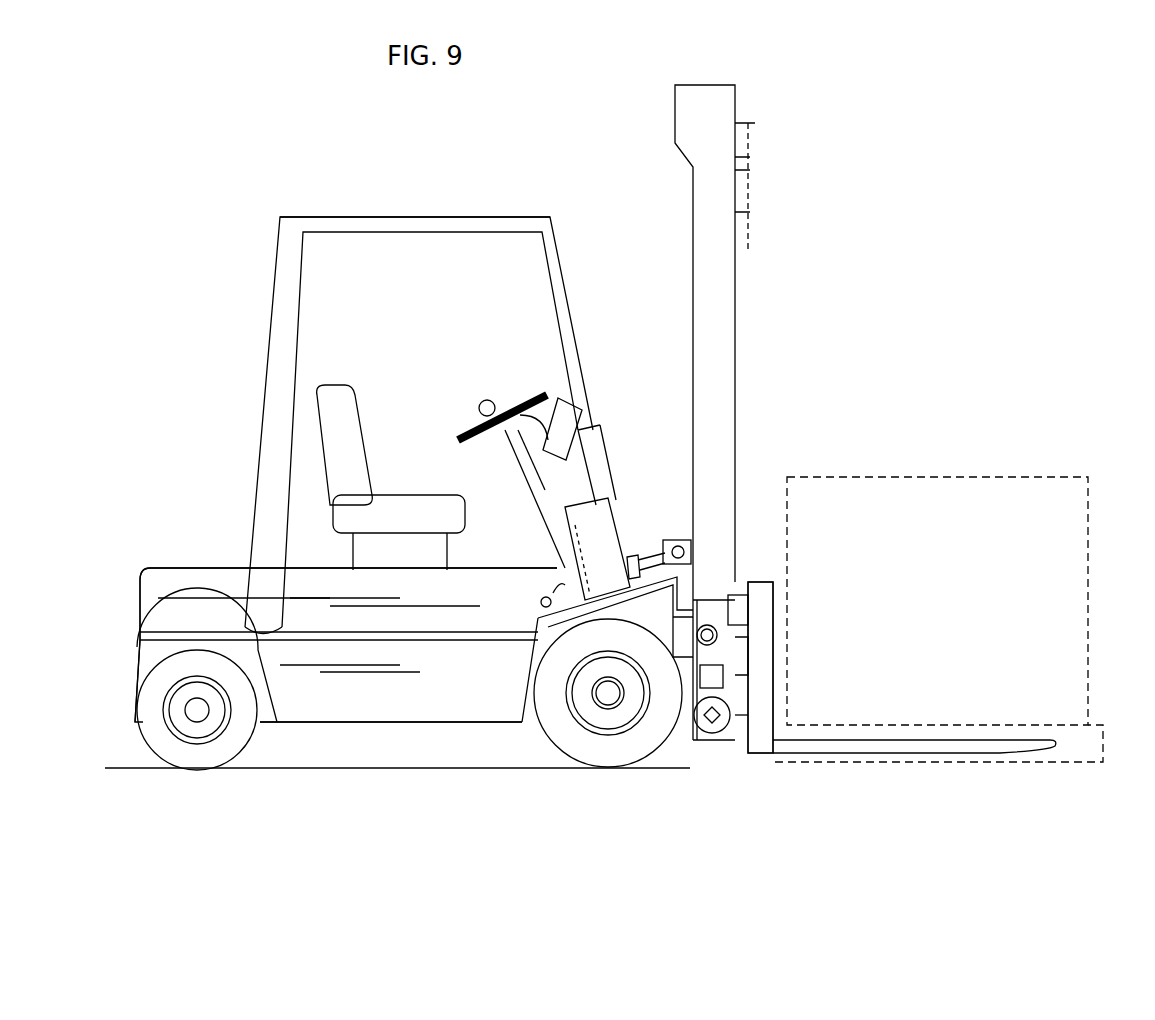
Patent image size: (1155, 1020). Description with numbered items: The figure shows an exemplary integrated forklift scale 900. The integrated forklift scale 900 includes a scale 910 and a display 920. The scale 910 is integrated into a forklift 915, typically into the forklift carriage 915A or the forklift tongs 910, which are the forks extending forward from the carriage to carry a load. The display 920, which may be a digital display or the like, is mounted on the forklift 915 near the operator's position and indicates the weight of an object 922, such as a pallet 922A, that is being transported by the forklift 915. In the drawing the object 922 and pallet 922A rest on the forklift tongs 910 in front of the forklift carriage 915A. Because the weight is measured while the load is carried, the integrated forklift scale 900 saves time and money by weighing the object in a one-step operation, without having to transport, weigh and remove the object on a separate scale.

The integrated forklift scale 900 is at (439, 427).
The scale 910 is at (945, 757).
The forklift 915 is at (372, 717).
The forklift carriage 915A is at (758, 603).
The display 920 is at (587, 403).
The object 922 is at (883, 477).
The pallet 922A is at (880, 762).